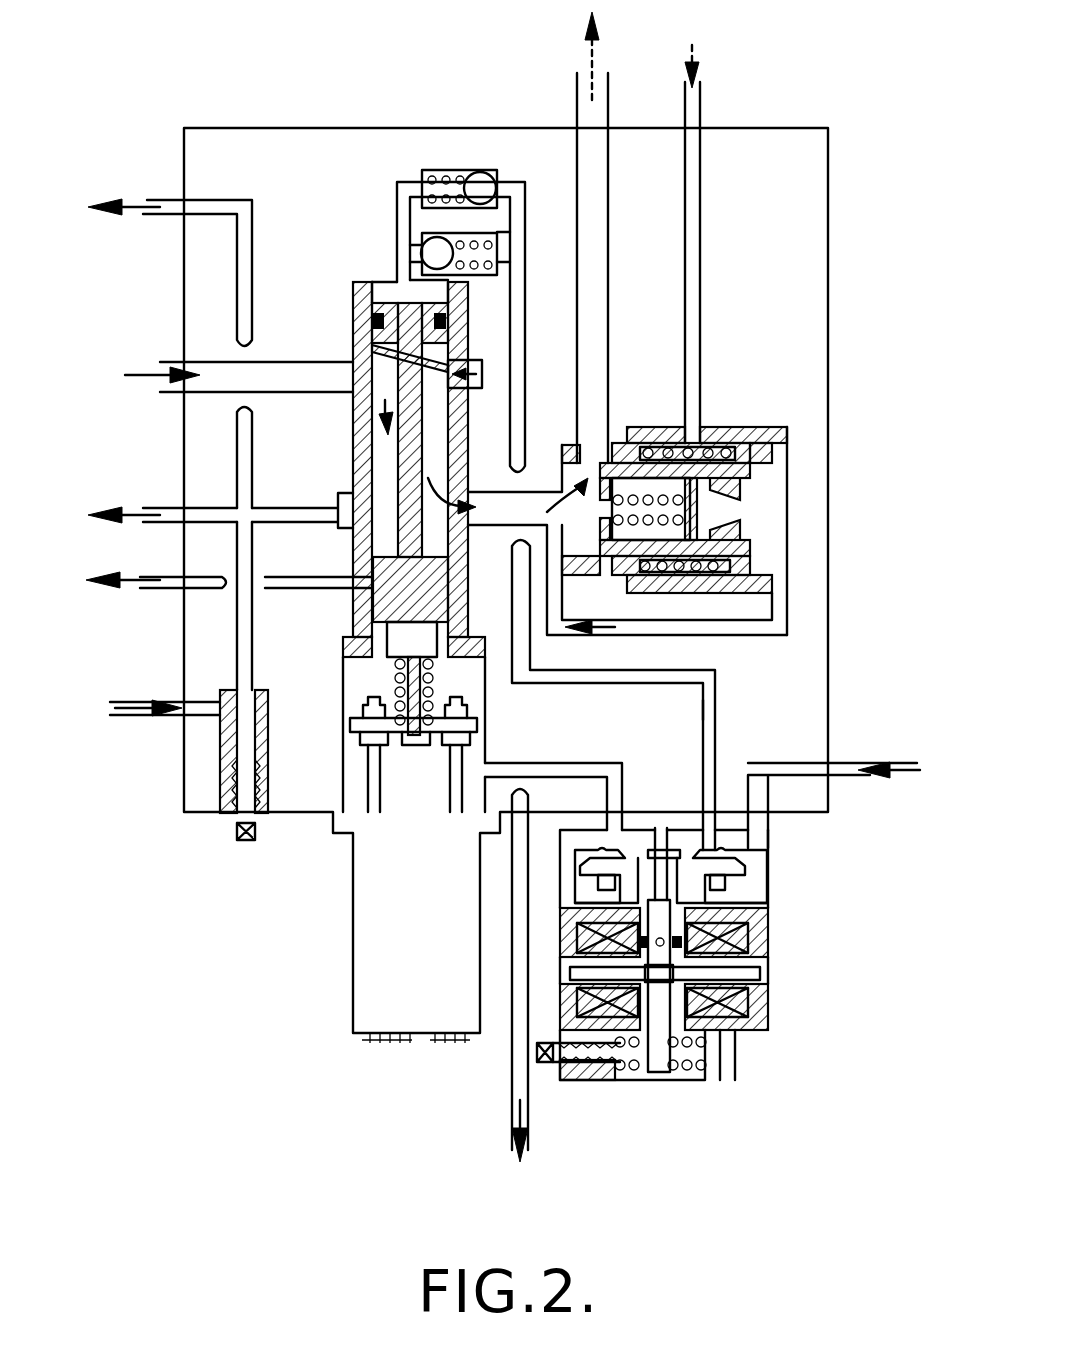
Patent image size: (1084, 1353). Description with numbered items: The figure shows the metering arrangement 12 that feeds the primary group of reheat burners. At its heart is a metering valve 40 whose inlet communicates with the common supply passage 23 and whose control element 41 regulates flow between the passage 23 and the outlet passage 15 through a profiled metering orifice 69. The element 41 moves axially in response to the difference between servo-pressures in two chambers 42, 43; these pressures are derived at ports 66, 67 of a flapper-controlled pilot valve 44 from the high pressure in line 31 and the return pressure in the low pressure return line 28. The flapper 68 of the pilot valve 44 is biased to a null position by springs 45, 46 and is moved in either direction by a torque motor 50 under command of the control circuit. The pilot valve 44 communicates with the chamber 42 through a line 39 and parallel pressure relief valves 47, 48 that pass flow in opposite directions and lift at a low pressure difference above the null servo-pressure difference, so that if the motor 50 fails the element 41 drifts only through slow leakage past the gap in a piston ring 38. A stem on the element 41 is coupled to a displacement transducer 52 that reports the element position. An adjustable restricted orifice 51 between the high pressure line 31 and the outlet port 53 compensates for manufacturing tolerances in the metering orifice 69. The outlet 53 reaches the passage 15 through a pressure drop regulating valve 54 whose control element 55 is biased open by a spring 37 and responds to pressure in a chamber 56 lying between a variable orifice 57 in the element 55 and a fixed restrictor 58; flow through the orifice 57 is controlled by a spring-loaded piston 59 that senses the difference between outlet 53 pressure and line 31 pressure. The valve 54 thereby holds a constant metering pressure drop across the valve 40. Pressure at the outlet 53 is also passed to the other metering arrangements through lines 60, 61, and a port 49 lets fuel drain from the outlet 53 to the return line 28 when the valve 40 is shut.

The metering arrangement 12 is at (296, 884).
The outlet passage 15 is at (598, 60).
The common supply passage 23 is at (160, 362).
The low pressure return line 28 is at (166, 590).
The high pressure line 31 is at (119, 728).
The spring 37 is at (722, 584).
The piston ring 38 is at (372, 320).
The line 39 is at (710, 692).
The metering valve 40 is at (348, 262).
The control element 41 is at (392, 355).
The chamber 42 is at (470, 295).
The chamber 43 is at (355, 785).
The flapper-controlled pilot valve 44 is at (782, 851).
The spring 45 is at (690, 1072).
The spring 46 is at (633, 1072).
The pressure relief valve 47 is at (481, 182).
The pressure relief valve 48 is at (432, 250).
The port 49 is at (358, 585).
The torque motor 50 is at (792, 967).
The adjustable restricted orifice 51 is at (248, 725).
The displacement transducer 52 is at (383, 993).
The outlet port 53 is at (488, 508).
The pressure drop regulating valve 54 is at (722, 410).
The control element 55 is at (712, 562).
The chamber 56 is at (770, 520).
The variable orifice 57 is at (712, 505).
The fixed restrictor 58 is at (668, 638).
The piston 59 is at (656, 428).
The line 60 is at (158, 508).
The line 61 is at (153, 200).
The port 66 is at (690, 845).
The port 67 is at (640, 855).
The flapper 68 is at (668, 887).
The metering orifice 69 is at (482, 375).